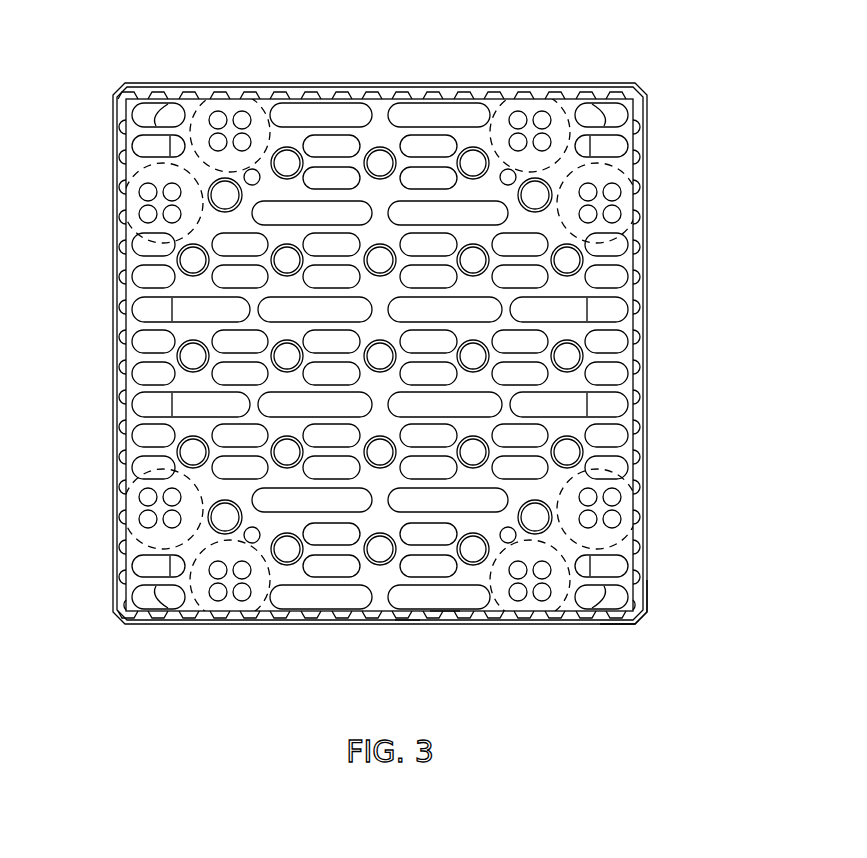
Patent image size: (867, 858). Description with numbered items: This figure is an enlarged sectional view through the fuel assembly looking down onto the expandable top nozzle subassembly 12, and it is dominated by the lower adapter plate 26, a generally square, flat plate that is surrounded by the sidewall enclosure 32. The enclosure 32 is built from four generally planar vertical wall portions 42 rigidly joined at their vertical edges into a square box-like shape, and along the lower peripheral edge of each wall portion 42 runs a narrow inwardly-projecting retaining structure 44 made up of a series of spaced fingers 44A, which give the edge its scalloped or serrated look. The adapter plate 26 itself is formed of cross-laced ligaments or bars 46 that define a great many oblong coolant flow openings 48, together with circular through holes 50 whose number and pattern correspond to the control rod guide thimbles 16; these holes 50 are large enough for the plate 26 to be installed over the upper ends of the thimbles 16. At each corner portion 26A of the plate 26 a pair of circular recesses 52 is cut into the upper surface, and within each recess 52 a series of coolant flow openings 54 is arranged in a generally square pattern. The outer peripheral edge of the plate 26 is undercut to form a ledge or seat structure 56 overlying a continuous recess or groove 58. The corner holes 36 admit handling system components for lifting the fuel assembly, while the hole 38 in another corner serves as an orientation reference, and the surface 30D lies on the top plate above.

The expandable top nozzle subassembly 12 is at (625, 41).
The control rod guide thimbles 16 is at (478, 243).
The lower adapter plate 26 is at (615, 612).
The corner portion of lower adapter plate 26A is at (200, 170).
The side wall 30D is at (125, 428).
The sidewall enclosure 32 is at (647, 267).
The hole 36 is at (612, 118).
The hole 38 is at (150, 116).
The vertical wall portions 42 is at (330, 92).
The retaining structure 44 is at (343, 626).
The fingers 44A is at (430, 92).
The cross-laced ligaments 46 is at (217, 387).
The coolant flow openings 48 is at (320, 186).
The circular through holes 50 is at (287, 348).
The circular recesses 52 is at (207, 100).
The coolant flow openings 54 is at (244, 133).
The ledge or seat structure 56 is at (406, 621).
The continuous recess or groove 58 is at (440, 618).